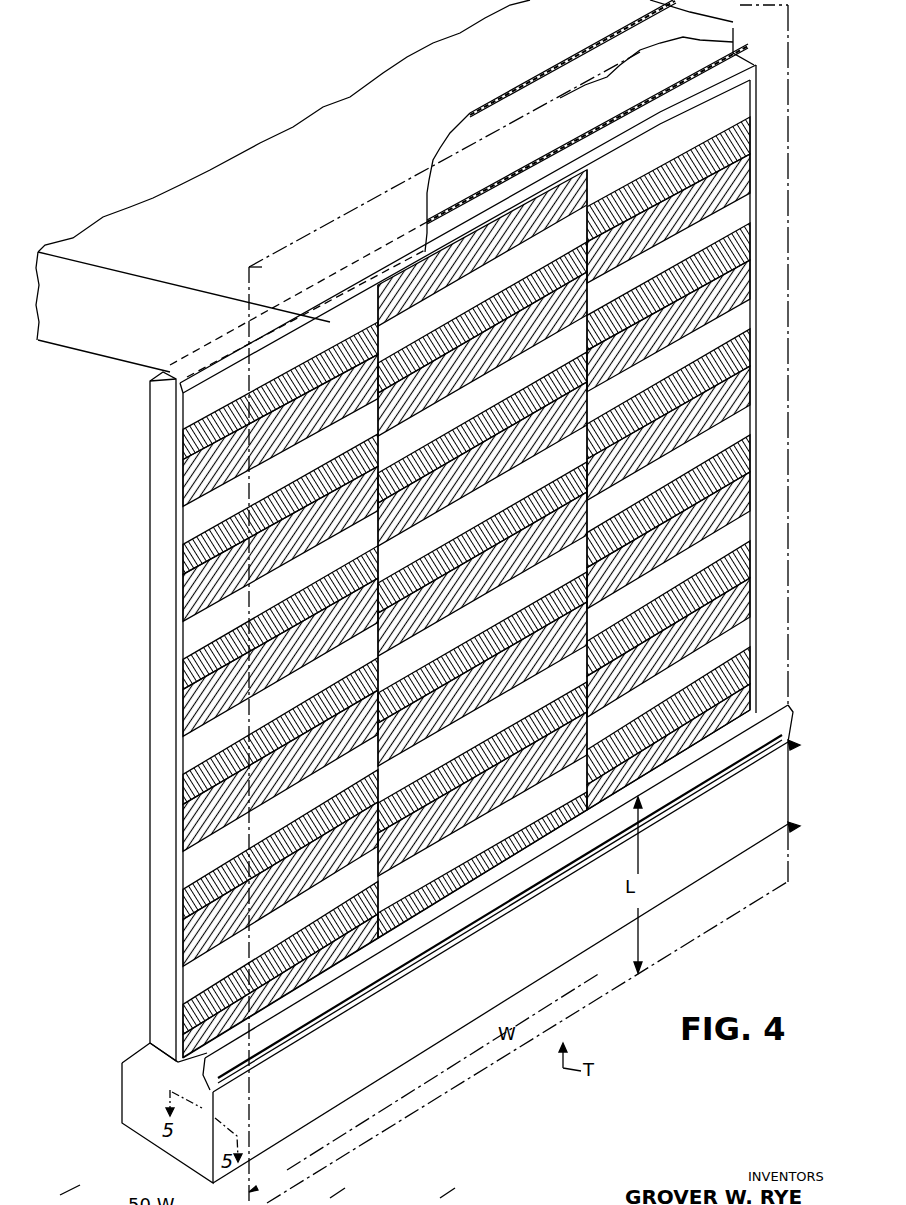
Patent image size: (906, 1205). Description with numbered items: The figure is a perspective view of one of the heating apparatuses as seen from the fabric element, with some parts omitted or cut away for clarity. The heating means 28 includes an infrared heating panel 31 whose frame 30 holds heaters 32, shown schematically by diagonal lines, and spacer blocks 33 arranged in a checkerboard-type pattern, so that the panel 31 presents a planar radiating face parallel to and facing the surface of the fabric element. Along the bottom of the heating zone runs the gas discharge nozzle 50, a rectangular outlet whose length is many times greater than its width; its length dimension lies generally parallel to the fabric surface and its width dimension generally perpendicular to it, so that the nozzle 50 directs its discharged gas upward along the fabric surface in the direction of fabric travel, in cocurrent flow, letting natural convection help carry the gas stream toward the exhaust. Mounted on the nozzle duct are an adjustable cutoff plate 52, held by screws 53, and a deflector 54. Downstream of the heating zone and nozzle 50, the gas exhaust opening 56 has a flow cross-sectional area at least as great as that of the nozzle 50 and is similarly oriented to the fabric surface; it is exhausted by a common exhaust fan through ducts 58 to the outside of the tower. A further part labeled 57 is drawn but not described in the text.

The heating means 28 is at (144, 706).
The frame 30 is at (150, 818).
The infrared heating panel 31 is at (183, 872).
The heaters 32 is at (742, 442).
The spacer blocks 33 is at (500, 300).
The gas discharge nozzle 50 is at (356, 988).
The adjustable cutoff plate 52 is at (336, 1196).
The screws 53 is at (66, 1195).
The deflector 54 is at (795, 722).
The gas exhaust opening 56 is at (233, 362).
The channel flange 57 is at (443, 1196).
The ducts 58 is at (155, 205).